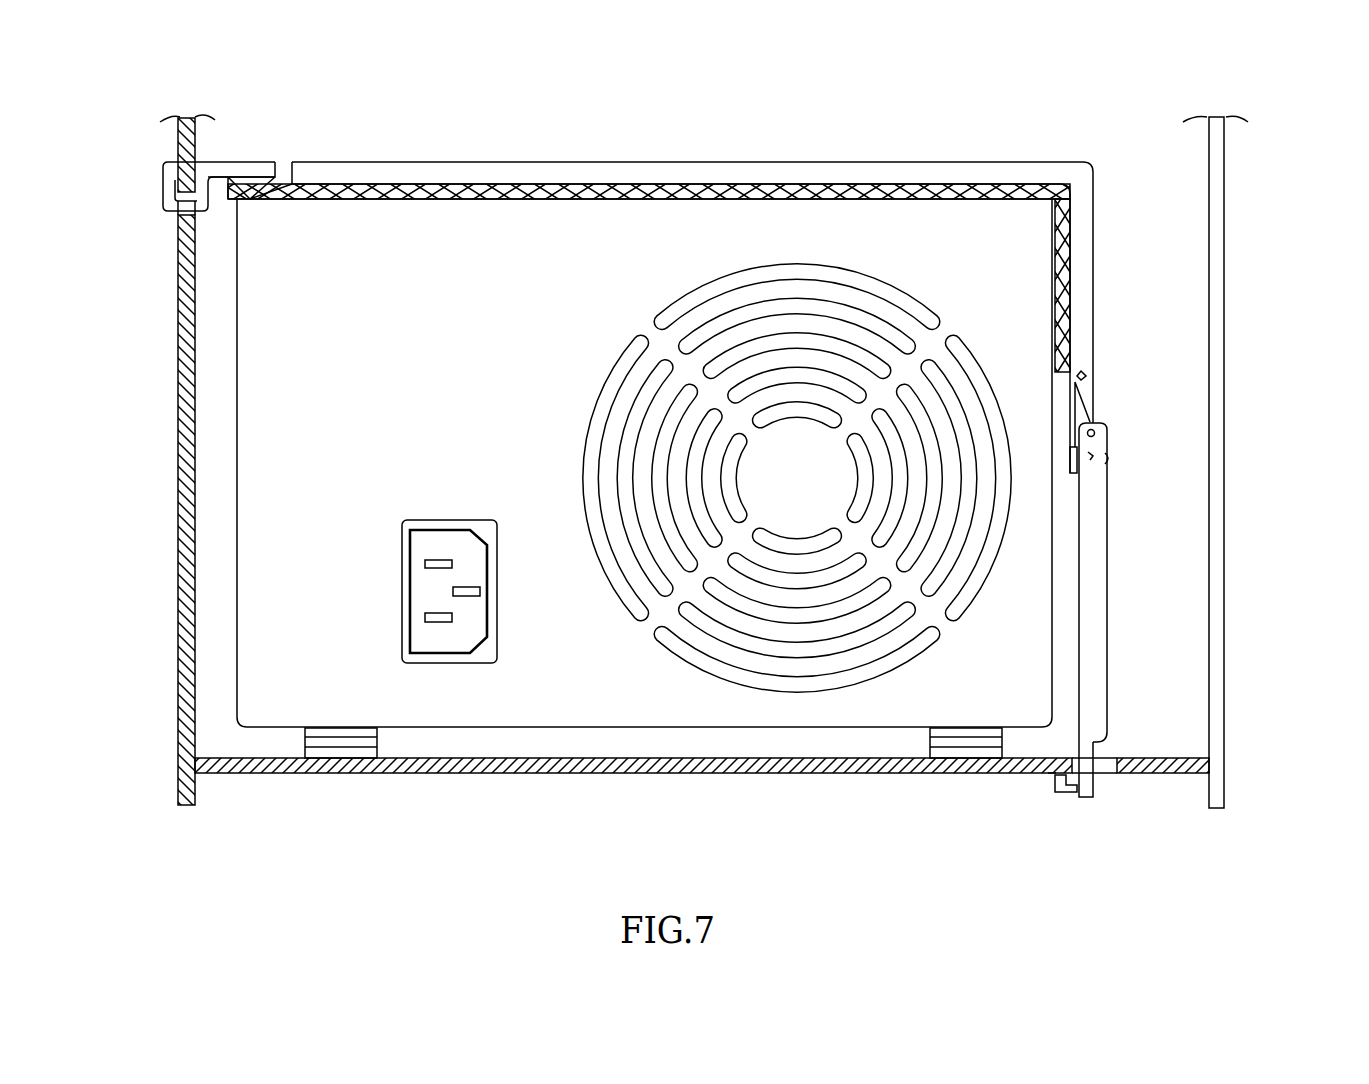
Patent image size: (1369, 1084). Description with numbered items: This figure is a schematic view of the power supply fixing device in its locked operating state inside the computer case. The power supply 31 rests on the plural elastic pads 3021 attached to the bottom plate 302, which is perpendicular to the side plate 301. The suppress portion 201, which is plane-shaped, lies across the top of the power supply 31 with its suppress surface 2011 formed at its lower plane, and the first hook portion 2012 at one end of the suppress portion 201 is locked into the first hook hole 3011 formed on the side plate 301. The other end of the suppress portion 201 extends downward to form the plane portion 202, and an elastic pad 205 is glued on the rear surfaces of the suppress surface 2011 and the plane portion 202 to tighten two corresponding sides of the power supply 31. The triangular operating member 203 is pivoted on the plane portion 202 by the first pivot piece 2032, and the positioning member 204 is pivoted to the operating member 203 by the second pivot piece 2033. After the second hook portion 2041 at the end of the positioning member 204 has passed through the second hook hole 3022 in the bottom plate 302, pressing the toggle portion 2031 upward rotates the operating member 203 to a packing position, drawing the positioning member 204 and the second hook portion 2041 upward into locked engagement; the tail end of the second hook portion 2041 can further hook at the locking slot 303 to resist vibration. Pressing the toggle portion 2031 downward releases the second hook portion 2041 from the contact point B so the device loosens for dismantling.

The suppress portion 201 is at (485, 172).
The suppress surface 2011 is at (517, 200).
The first hook portion 2012 is at (220, 121).
The plane portion 202 is at (1080, 272).
The operating member 203 is at (1079, 409).
The toggle portion 2031 is at (1082, 376).
The first pivot piece 2032 is at (1094, 457).
The second pivot piece 2033 is at (1095, 433).
The positioning member 204 is at (1090, 592).
The second hook portion 2041 is at (1085, 798).
The elastic pad 205 is at (640, 187).
The side plate 301 is at (180, 567).
The first hook hole 3011 is at (178, 217).
The bottom plate 302 is at (492, 775).
The elastic pads 3021 is at (345, 748).
The second hook hole 3022 is at (1113, 757).
The locking slot 303 is at (1055, 792).
The power supply 31 is at (252, 693).
The contact point B is at (1050, 775).